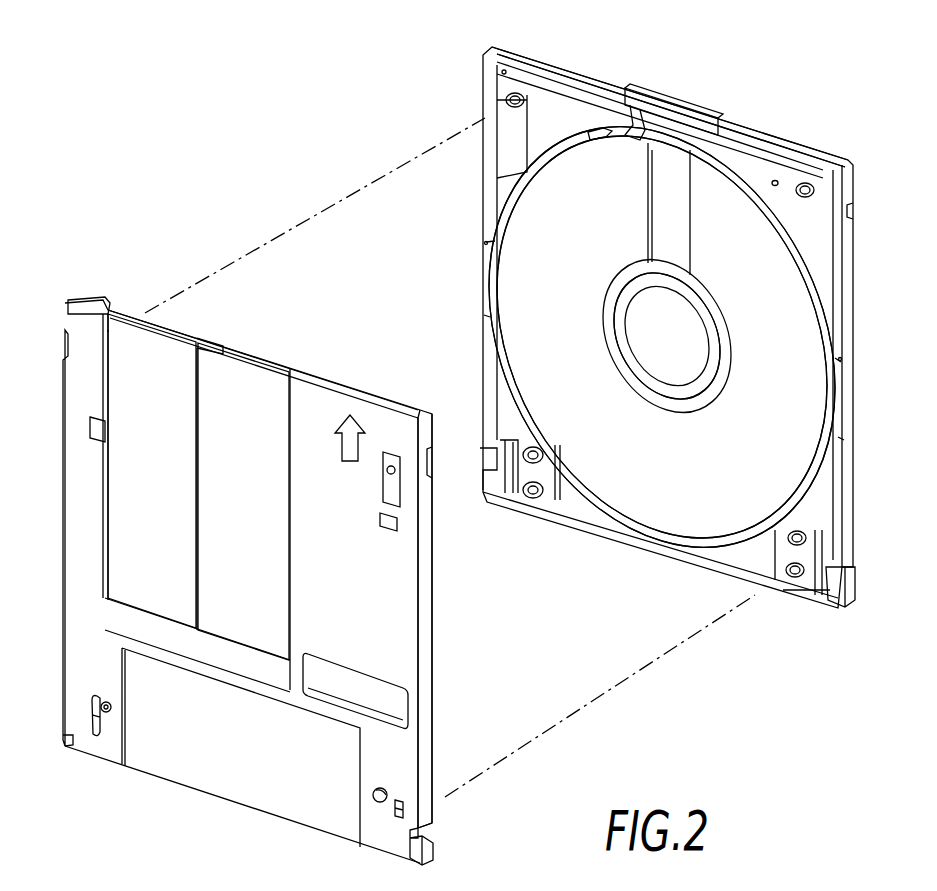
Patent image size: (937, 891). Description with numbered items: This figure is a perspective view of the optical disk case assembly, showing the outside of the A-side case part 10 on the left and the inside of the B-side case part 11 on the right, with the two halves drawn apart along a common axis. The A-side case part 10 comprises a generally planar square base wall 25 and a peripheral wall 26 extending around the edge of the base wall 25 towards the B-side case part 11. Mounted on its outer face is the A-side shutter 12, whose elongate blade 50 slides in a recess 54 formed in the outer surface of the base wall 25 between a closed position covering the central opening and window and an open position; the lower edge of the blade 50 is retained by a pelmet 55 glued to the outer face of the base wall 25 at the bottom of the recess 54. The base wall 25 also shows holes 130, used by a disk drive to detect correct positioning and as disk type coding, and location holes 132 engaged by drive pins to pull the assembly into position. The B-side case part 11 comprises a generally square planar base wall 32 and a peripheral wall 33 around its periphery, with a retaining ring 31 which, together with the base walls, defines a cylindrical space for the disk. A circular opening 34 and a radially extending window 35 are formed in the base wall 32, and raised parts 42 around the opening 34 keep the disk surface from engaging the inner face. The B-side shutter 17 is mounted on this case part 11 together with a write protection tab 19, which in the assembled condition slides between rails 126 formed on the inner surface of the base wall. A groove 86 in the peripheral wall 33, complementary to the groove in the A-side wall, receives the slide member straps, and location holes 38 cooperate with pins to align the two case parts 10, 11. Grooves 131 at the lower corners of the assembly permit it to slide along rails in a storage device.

The A-side case part 10 is at (206, 812).
The B-side case part 11 is at (870, 538).
The A-side shutter 12 is at (258, 364).
The B-side shutter 17 is at (678, 104).
The write protection tab 19 is at (506, 478).
The base wall 25 is at (361, 568).
The peripheral wall 26 is at (428, 688).
The retaining ring 31 is at (510, 186).
The base wall 32 is at (561, 343).
The peripheral wall 33 is at (848, 448).
The circular opening 34 is at (684, 351).
The radially extending window 35 is at (686, 220).
The location holes 38 is at (592, 140).
The raised parts 42 is at (697, 397).
The blade 50 is at (256, 510).
The recess 54 is at (166, 483).
The pelmet 55 is at (222, 651).
The groove 86 is at (586, 86).
The rails 126 is at (812, 590).
The holes 130 is at (388, 472).
The grooves 131 is at (70, 735).
The location holes 132 is at (111, 708).